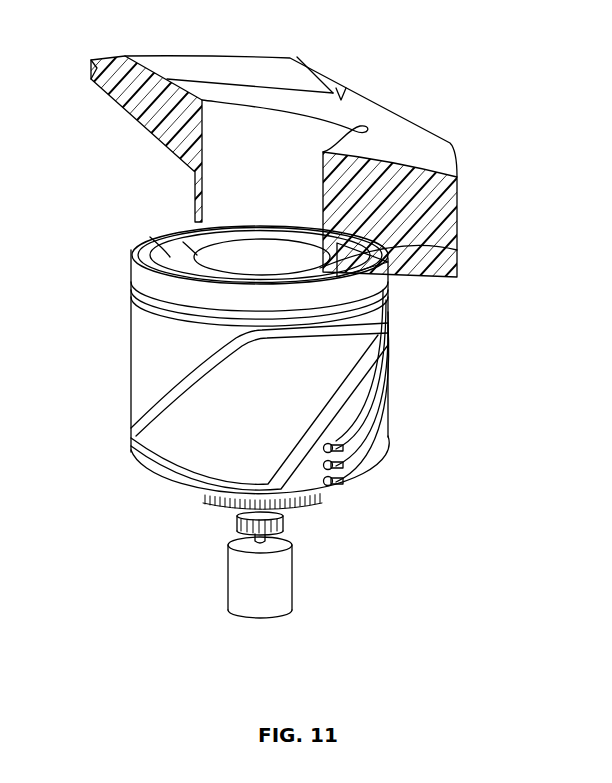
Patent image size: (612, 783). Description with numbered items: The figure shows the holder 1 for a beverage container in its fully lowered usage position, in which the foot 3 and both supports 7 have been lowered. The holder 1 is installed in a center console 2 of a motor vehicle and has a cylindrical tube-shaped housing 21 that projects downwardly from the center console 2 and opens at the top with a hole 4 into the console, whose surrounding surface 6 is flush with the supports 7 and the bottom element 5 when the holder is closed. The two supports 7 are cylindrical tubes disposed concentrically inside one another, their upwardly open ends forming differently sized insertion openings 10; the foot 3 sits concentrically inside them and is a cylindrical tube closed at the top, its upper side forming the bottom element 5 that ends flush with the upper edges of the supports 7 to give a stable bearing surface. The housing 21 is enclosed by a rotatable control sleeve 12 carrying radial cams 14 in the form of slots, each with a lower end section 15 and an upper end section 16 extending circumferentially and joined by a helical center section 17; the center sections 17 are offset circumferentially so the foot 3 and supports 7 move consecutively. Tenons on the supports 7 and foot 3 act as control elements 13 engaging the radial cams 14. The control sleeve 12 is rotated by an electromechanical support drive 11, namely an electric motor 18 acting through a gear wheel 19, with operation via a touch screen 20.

The holder 1 is at (477, 88).
The center console 2 is at (93, 78).
The foot 3 is at (216, 227).
The hole 4 is at (356, 125).
The bottom element 5 is at (247, 260).
The surrounding surface 6 is at (340, 88).
The supports 7 is at (137, 244).
The insertion openings 10 is at (256, 95).
The electromechanical support drive 11 is at (182, 540).
The control sleeve 12 is at (138, 360).
The control elements 13 is at (338, 470).
The radial cams 14 is at (201, 406).
The lower end section 15 is at (135, 430).
The upper end section 16 is at (388, 303).
The center sections 17 is at (370, 390).
The electric motor 18 is at (285, 582).
The gear wheel 19 is at (275, 523).
The touch screen 20 is at (178, 68).
The housing 21 is at (457, 250).